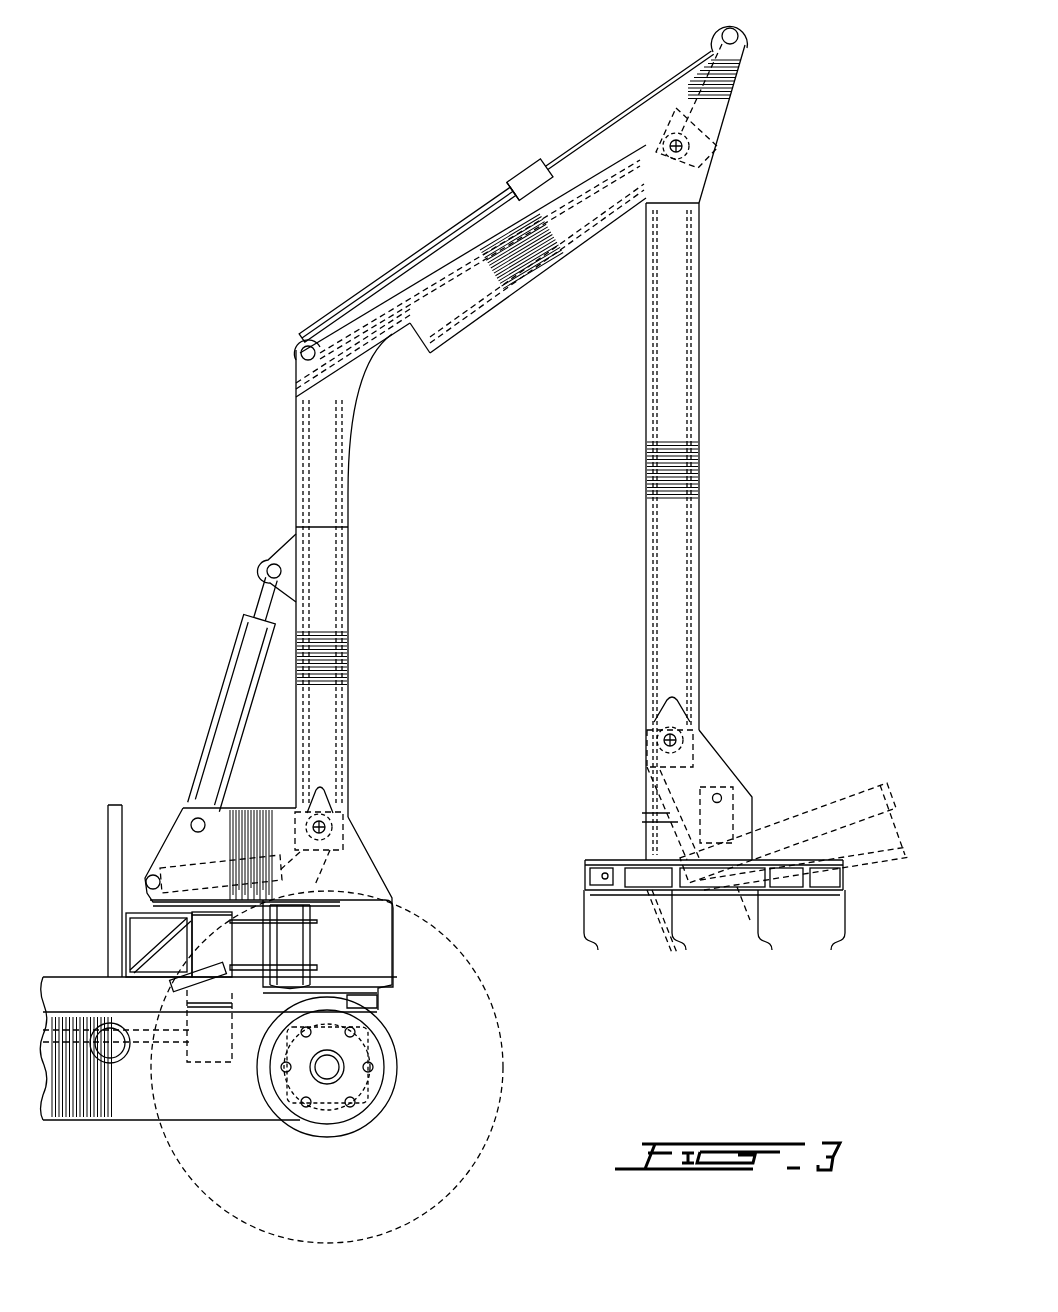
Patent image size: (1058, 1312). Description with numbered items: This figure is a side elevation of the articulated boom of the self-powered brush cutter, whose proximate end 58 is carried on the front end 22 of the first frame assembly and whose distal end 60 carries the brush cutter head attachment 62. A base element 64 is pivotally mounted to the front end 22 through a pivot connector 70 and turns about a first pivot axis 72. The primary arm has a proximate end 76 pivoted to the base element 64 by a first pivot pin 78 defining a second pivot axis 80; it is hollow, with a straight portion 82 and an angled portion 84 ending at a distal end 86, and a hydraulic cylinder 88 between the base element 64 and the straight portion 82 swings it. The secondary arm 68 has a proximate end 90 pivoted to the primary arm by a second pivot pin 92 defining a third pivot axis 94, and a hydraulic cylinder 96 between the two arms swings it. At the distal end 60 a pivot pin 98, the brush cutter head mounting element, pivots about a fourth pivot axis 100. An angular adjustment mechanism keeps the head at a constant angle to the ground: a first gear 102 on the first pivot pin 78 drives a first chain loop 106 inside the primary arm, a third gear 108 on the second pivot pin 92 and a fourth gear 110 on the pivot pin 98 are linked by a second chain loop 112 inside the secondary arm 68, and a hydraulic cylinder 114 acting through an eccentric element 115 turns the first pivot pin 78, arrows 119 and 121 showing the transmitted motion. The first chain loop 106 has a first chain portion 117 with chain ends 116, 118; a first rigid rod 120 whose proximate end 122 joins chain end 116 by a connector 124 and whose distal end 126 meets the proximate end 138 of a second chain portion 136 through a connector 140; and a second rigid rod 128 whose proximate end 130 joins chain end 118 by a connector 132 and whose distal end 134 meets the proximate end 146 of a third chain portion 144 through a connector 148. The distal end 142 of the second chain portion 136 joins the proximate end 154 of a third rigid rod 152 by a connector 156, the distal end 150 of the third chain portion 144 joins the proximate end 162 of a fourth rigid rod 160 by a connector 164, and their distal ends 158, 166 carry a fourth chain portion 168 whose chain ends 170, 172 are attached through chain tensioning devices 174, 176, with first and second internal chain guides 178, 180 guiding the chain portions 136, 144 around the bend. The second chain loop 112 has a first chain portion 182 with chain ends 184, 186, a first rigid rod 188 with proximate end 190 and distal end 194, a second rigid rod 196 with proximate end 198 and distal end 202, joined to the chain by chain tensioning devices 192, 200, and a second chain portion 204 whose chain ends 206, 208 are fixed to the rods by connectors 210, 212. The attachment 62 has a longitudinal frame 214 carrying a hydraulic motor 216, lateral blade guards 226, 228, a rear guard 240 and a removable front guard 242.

The front end 22 is at (385, 1012).
The proximate end 58 is at (395, 981).
The distal end 60 is at (703, 762).
The brush cutter head attachment 62 is at (862, 940).
The base element 64 is at (400, 900).
The secondary arm 68 is at (700, 420).
The pivot connector 70 is at (283, 957).
The first pivot axis 72 is at (360, 963).
The proximate end 76 is at (347, 852).
The first pivot pin 78 is at (350, 817).
The second pivot axis 80 is at (317, 823).
The straight portion 82 is at (296, 534).
The angled portion 84 is at (490, 333).
The distal end 86 is at (690, 110).
The hydraulic cylinder 88 is at (233, 680).
The proximate end 90 is at (712, 170).
The second pivot pin 92 is at (676, 146).
The third pivot axis 94 is at (676, 146).
The hydraulic cylinder 96 is at (453, 233).
The pivot pin 98 is at (693, 731).
The fourth pivot axis 100 is at (660, 733).
The first gear 102 is at (327, 800).
The first chain loop 106 is at (347, 577).
The third gear 108 is at (710, 167).
The fourth gear 110 is at (687, 702).
The second chain loop 112 is at (693, 517).
The hydraulic cylinder 114 is at (146, 880).
The eccentric element 115 is at (292, 845).
The first chain end 116 is at (348, 762).
The first chain portion 117 is at (355, 845).
The second chain end 118 is at (302, 760).
The arrow 119 is at (313, 887).
The first rigid rod 120 is at (353, 610).
The arrow 121 is at (892, 844).
The proximate end 122 is at (345, 720).
The connector 124 is at (347, 743).
The distal end 126 is at (353, 522).
The second rigid rod 128 is at (303, 618).
The proximate end 130 is at (293, 717).
The connector 132 is at (303, 745).
The distal end 134 is at (295, 510).
The second chain portion 136 is at (352, 450).
The proximate end 138 is at (353, 485).
The connector 140 is at (353, 503).
The distal end 142 is at (405, 397).
The third chain portion 144 is at (300, 450).
The proximate end 146 is at (295, 477).
The connector 148 is at (295, 495).
The distal end 150 is at (370, 337).
The third rigid rod 152 is at (478, 330).
The proximate end 154 is at (418, 363).
The connector 156 is at (437, 385).
The distal end 158 is at (530, 296).
The fourth rigid rod 160 is at (440, 267).
The proximate end 162 is at (400, 327).
The connector 164 is at (390, 333).
The distal end 166 is at (493, 200).
The fourth chain portion 168 is at (650, 128).
The first chain end 170 is at (598, 305).
The second chain end 172 is at (620, 145).
The chain tensioning device 174 is at (556, 270).
The chain tensioning device 176 is at (557, 190).
The first internal chain guide 178 is at (352, 420).
The second internal chain guide 180 is at (300, 425).
The first chain portion 182 is at (720, 147).
The first chain end 184 is at (707, 200).
The second chain end 186 is at (703, 213).
The first rigid rod 188 is at (645, 427).
The proximate end 190 is at (650, 328).
The chain tensioning device 192 is at (645, 275).
The distal end 194 is at (652, 650).
The second rigid rod 196 is at (700, 377).
The proximate end 198 is at (703, 317).
The chain tensioning device 200 is at (692, 265).
The distal end 202 is at (707, 630).
The second chain portion 204 is at (640, 773).
The first chain end 206 is at (648, 673).
The second chain end 208 is at (700, 677).
The connector 210 is at (646, 660).
The connector 212 is at (690, 660).
The longitudinal frame 214 is at (648, 858).
The hydraulic motor 216 is at (750, 807).
The lateral blade guard 226 is at (770, 942).
The lateral blade guard 228 is at (680, 945).
The rear guard 240 is at (598, 943).
The front guard 242 is at (835, 942).